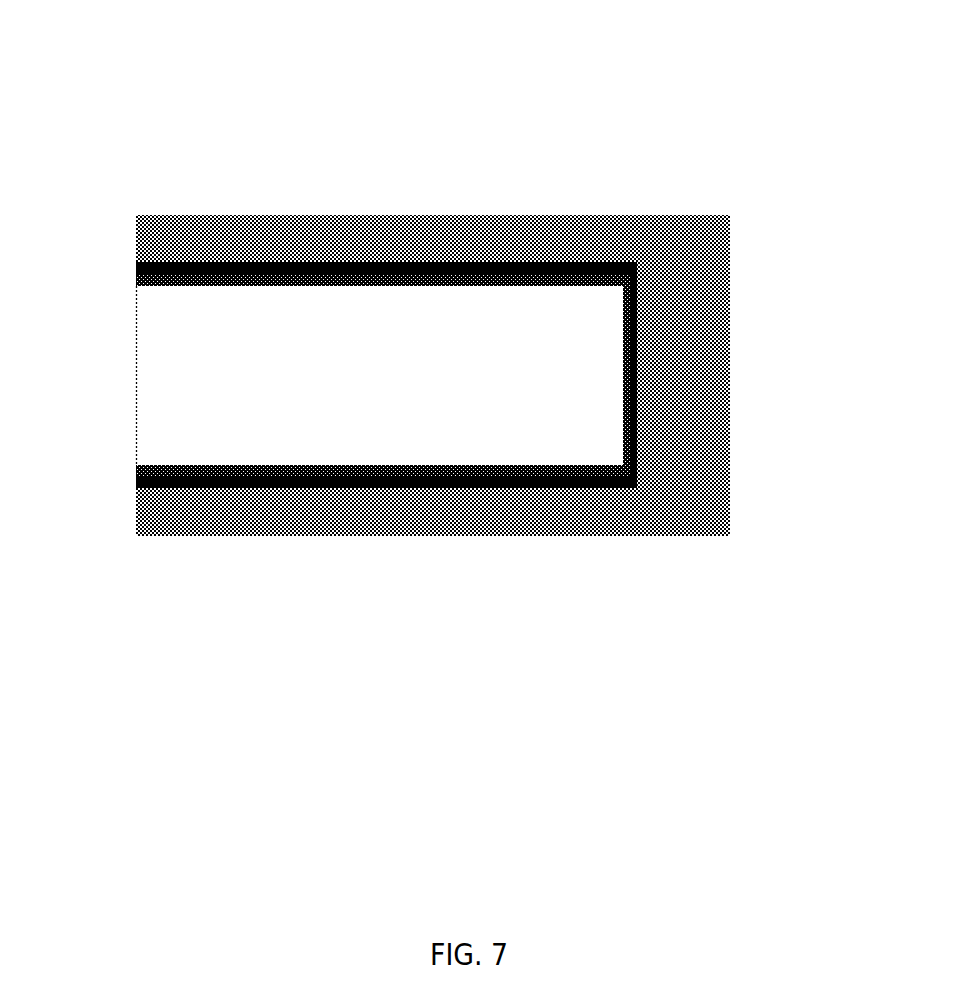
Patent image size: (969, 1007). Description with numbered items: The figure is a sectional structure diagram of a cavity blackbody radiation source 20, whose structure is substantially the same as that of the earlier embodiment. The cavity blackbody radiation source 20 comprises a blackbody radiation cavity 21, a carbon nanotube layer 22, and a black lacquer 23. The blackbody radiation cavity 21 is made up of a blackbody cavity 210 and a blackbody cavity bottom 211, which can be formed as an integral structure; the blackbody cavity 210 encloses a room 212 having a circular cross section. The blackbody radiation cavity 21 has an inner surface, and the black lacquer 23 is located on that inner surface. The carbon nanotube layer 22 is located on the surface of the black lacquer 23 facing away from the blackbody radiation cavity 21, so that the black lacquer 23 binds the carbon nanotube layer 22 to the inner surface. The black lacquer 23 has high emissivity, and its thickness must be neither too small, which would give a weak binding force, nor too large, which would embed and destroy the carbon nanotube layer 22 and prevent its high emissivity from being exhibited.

The cavity blackbody radiation source 20 is at (457, 279).
The blackbody radiation cavity 21 is at (502, 300).
The blackbody cavity 210 is at (578, 227).
The blackbody cavity bottom 211 is at (688, 270).
The room 212 is at (188, 380).
The carbon nanotube layer 22 is at (182, 278).
The black lacquer 23 is at (126, 279).